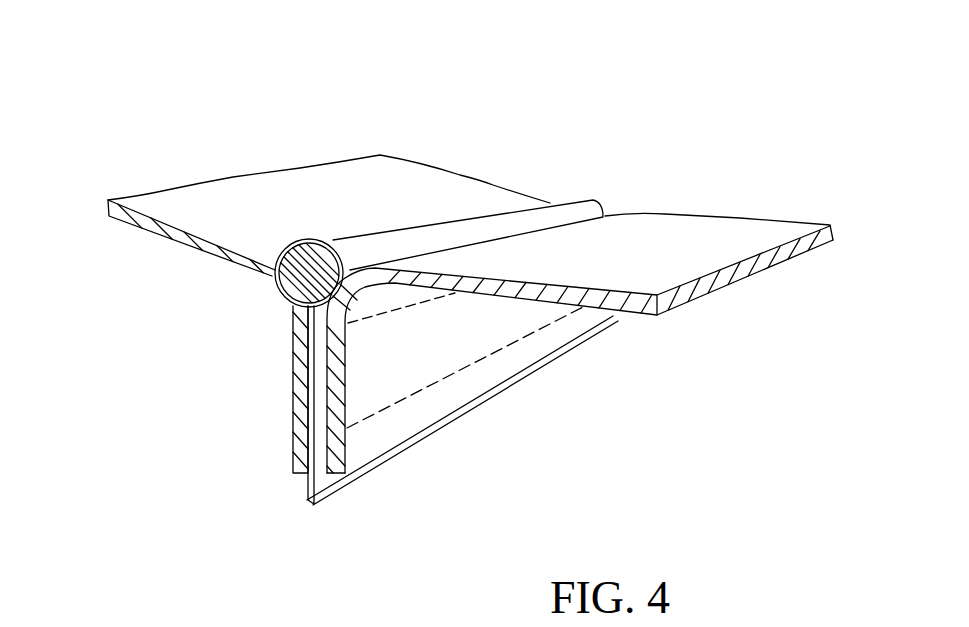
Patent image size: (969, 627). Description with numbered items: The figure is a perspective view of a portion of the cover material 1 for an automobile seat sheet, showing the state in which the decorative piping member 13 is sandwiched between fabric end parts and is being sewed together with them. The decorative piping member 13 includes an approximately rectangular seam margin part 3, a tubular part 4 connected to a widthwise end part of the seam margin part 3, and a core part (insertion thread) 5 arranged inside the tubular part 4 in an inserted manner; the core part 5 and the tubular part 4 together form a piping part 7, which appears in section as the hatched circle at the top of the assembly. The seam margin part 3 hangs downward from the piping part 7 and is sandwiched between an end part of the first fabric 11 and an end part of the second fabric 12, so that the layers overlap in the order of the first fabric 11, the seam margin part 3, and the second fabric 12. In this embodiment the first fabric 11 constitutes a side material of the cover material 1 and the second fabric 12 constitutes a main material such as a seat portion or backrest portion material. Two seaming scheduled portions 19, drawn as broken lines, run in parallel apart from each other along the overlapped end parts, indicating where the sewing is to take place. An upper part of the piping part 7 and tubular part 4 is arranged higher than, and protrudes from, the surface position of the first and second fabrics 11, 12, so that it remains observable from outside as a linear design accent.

The cover material 1 is at (714, 90).
The seam margin part 3 is at (318, 433).
The tubular part 4 is at (276, 276).
The core part (insertion thread) 5 is at (303, 280).
The piping part 7 is at (150, 290).
The first fabric 11 is at (300, 182).
The second fabric 12 is at (697, 240).
The decorative piping member 13 is at (573, 217).
The seaming scheduled portion 19 is at (413, 400).